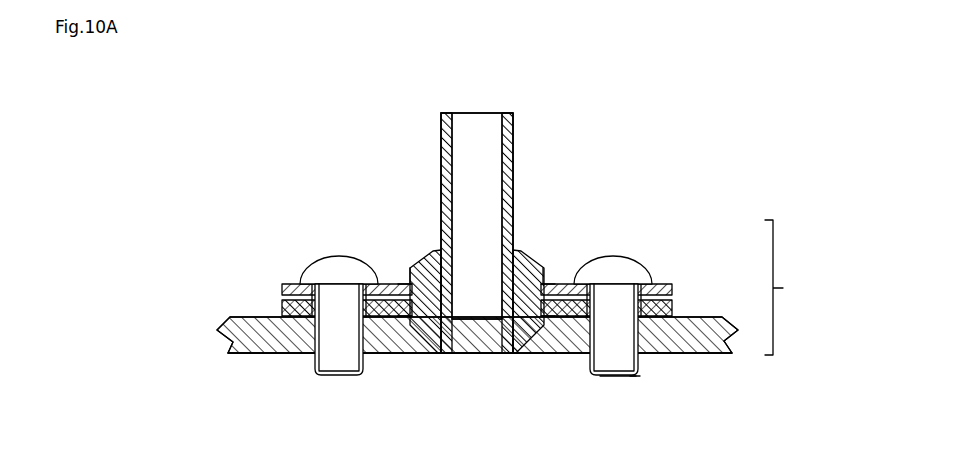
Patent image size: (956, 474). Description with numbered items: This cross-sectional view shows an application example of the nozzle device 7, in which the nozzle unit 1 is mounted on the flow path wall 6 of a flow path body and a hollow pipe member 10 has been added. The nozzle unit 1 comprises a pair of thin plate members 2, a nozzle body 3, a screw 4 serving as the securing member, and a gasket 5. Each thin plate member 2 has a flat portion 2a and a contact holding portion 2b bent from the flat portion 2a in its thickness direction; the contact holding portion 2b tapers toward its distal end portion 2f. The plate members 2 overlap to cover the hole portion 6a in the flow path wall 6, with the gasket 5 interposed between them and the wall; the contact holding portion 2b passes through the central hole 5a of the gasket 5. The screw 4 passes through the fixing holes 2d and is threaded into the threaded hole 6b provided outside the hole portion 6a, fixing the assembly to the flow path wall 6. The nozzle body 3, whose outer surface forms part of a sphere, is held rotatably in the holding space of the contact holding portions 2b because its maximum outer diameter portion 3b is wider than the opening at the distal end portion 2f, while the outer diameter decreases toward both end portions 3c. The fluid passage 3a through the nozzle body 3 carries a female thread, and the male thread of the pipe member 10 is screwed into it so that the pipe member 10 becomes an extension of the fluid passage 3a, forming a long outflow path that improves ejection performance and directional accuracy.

The nozzle unit 1 is at (541, 103).
The hollow pipe member 10 is at (441, 114).
The nozzle body 3 is at (530, 255).
The fluid passage 3a is at (458, 355).
The maximum outer diameter portion 3b is at (404, 340).
The end portions 3c is at (438, 250).
The thin plate member 2 is at (282, 304).
The flat portion 2a is at (388, 348).
The contact holding portion 2b is at (396, 282).
The fixing hole 2d is at (608, 378).
The distal end portion 2f is at (413, 258).
The screw 4 is at (326, 256).
The gasket 5 is at (700, 315).
The central hole 5a is at (636, 377).
The flow path wall 6 is at (275, 355).
The hole portion 6a is at (552, 352).
The threaded hole 6b is at (598, 352).
The nozzle device 7 is at (782, 287).